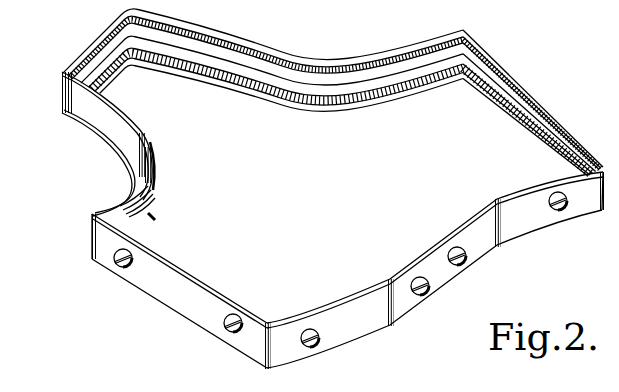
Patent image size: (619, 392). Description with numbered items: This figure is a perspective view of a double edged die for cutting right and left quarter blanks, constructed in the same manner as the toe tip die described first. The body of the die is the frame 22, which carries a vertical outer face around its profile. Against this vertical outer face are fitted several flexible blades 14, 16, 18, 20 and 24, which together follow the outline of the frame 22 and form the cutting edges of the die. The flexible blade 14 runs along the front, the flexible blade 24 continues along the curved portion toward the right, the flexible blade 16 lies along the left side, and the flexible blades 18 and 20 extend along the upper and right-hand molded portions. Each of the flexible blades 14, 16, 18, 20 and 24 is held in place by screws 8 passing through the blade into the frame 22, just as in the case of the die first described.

The flexible blade 18 is at (92, 39).
The flexible blade 20 is at (540, 107).
The flexible blade 16 is at (112, 128).
The frame 22 is at (137, 190).
The flexible blade 14 is at (182, 293).
The flexible blade 24 is at (530, 212).
The screws 8 is at (317, 346).